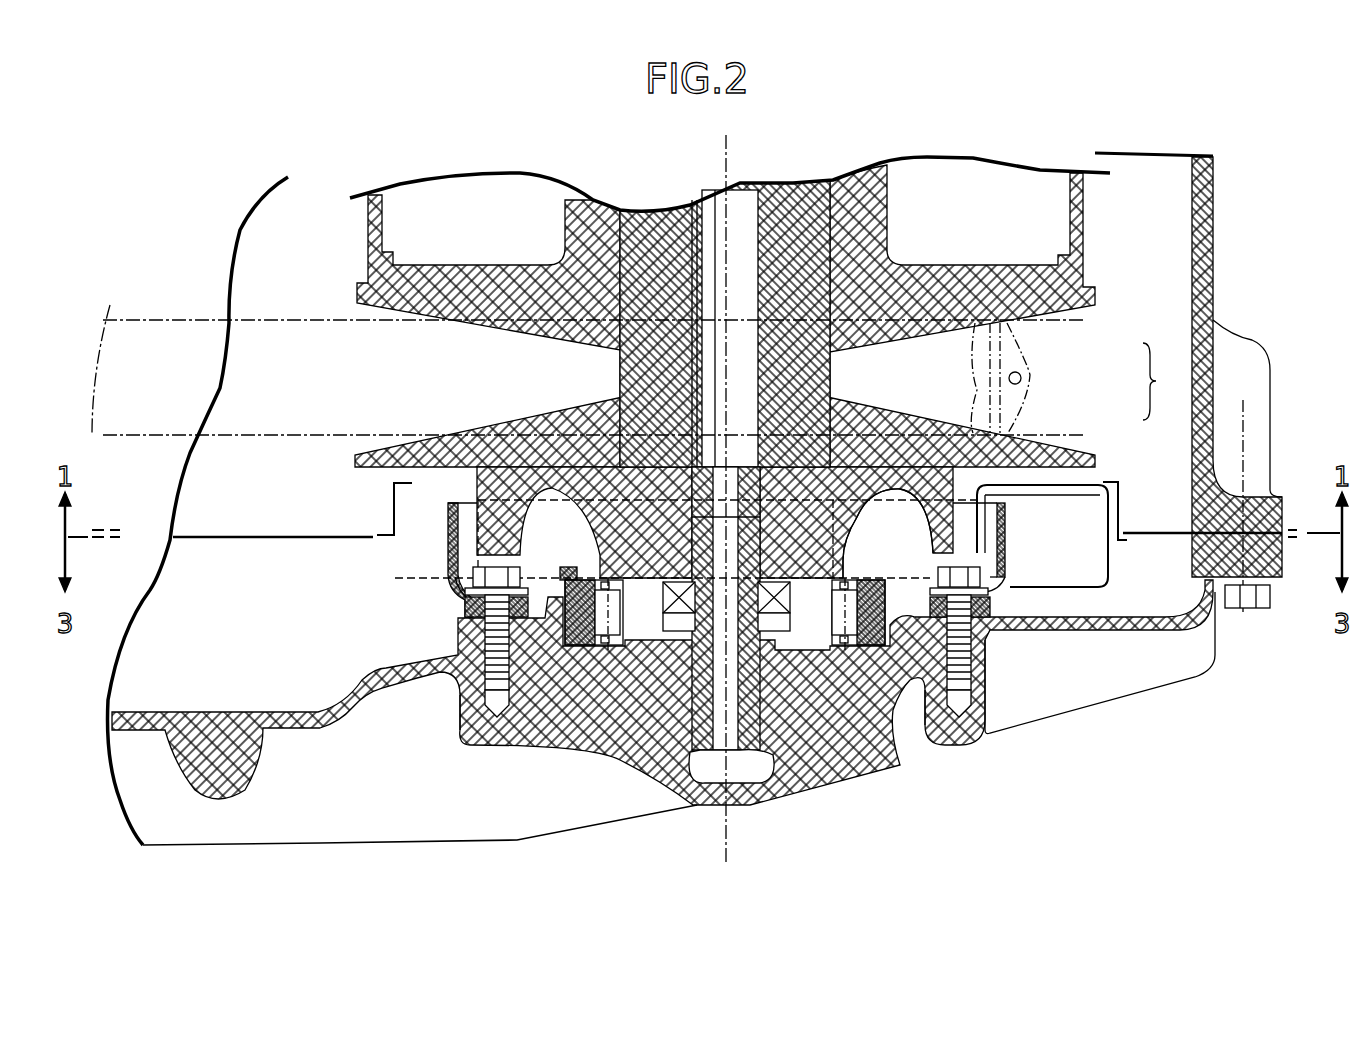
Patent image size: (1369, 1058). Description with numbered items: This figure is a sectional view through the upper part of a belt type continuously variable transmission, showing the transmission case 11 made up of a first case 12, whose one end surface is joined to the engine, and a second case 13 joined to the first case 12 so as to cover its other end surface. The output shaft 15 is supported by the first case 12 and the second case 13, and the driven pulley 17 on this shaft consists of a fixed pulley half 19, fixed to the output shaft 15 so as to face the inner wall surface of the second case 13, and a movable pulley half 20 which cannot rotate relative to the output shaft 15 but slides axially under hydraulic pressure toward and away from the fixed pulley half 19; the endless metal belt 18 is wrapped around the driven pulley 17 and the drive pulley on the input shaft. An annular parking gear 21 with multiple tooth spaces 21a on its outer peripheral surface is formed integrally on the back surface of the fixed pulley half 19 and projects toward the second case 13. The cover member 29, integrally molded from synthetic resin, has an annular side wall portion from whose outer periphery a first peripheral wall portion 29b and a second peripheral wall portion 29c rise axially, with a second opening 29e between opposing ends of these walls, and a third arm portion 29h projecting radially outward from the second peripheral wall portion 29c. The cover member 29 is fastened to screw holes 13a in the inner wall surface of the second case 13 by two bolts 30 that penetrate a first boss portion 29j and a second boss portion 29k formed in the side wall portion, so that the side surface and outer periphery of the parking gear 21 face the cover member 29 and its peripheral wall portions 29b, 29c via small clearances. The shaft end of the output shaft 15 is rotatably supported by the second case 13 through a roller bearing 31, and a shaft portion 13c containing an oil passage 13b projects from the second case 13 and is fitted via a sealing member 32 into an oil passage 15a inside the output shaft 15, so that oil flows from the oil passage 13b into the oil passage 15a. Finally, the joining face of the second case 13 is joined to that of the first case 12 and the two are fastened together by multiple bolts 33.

The transmission case 11 is at (1246, 258).
The first case 12 is at (1217, 207).
The second case 13 is at (1124, 634).
The screw holes 13a is at (488, 630).
The oil passage 13b is at (736, 667).
The shaft portion 13c is at (695, 662).
The output shaft 15 is at (746, 371).
The oil passage 15a is at (757, 208).
The driven pulley 17 is at (1074, 378).
The endless metal belt 18 is at (1022, 372).
The fixed pulley half 19 is at (1055, 450).
The movable pulley half 20 is at (1068, 307).
The parking gear 21 is at (985, 520).
The tooth spaces 21a is at (1004, 540).
The cover member 29 is at (446, 524).
The first peripheral wall portion 29b is at (448, 545).
The second peripheral wall portion 29c is at (1010, 560).
The second opening 29e is at (833, 530).
The third arm portion 29h is at (1093, 550).
The first boss portion 29j is at (545, 632).
The second boss portion 29k is at (935, 652).
The bolts 30 is at (505, 578).
The roller bearing 31 is at (572, 568).
The sealing member 32 is at (677, 608).
The bolts 33 is at (1252, 608).